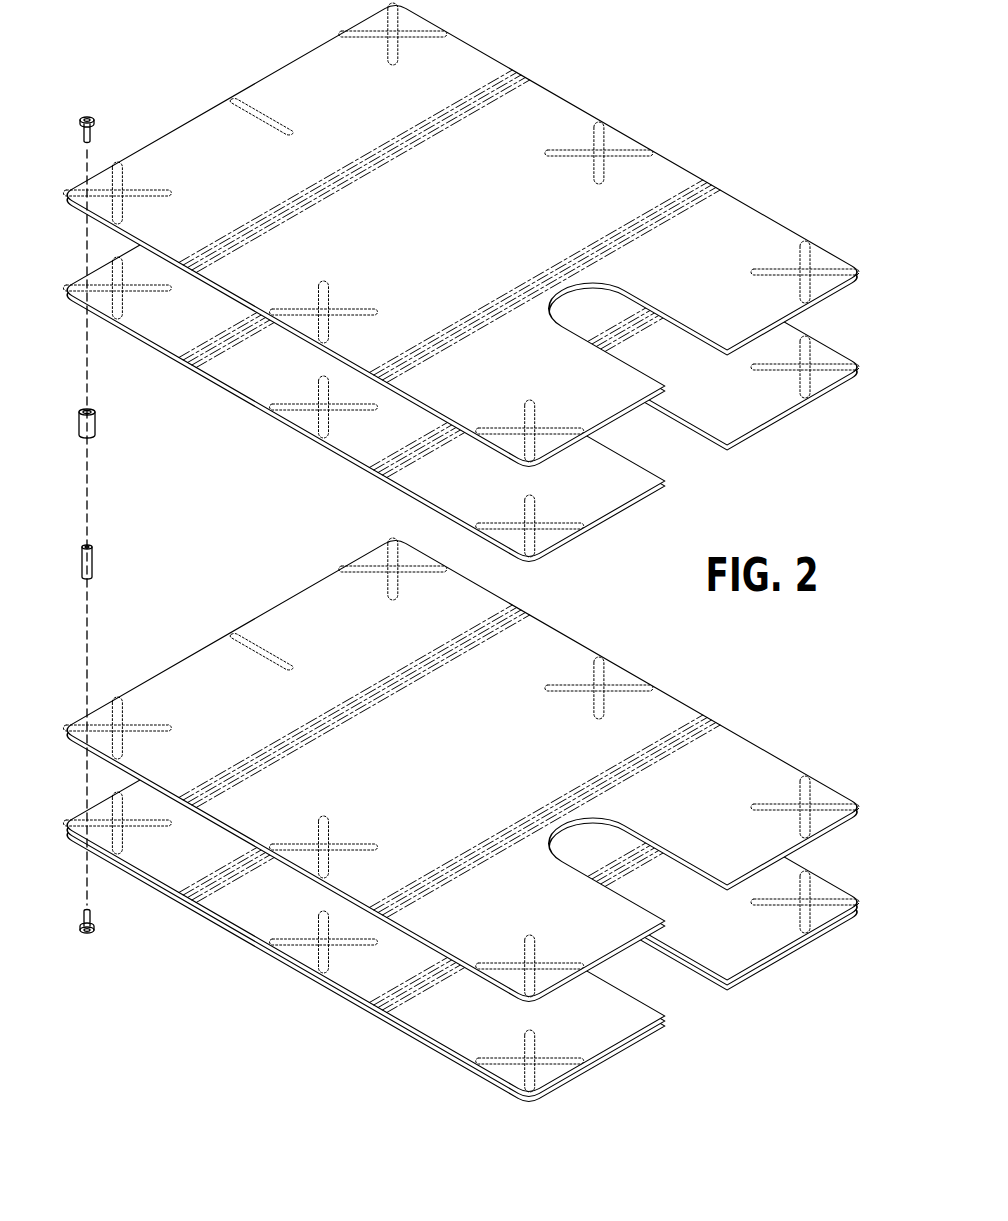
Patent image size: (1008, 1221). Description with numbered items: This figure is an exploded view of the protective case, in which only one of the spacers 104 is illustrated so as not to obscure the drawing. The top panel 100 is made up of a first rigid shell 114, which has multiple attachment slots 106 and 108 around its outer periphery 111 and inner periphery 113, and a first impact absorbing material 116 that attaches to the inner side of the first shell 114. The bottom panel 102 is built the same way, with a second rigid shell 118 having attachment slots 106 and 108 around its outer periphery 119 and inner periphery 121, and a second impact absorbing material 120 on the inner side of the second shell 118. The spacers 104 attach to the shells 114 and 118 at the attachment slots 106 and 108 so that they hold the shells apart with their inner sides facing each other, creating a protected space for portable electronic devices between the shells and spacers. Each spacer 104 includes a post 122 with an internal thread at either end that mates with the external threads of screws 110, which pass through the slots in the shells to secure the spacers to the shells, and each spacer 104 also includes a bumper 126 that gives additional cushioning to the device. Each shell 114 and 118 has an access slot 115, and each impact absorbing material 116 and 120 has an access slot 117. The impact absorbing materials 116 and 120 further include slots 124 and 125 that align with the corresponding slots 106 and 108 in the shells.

The top panel 100 is at (463, 515).
The bottom panel 102 is at (432, 821).
The spacer 104 is at (96, 496).
The attachment slot 106 is at (326, 288).
The attachment slot 108 is at (277, 113).
The screw 110 is at (87, 117).
The outer periphery 111 is at (493, 236).
The inner periphery 113 is at (846, 314).
The first rigid shell 114 is at (735, 222).
The access slot 115 is at (683, 362).
The first impact absorbing material 116 is at (742, 417).
The access slot 117 is at (678, 456).
The second rigid shell 118 is at (742, 952).
The outer periphery 119 is at (399, 1052).
The second impact absorbing material 120 is at (462, 771).
The inner periphery 121 is at (350, 990).
The post 122 is at (126, 560).
The slot 124 is at (326, 823).
The slot 125 is at (277, 648).
The bumper 126 is at (97, 422).